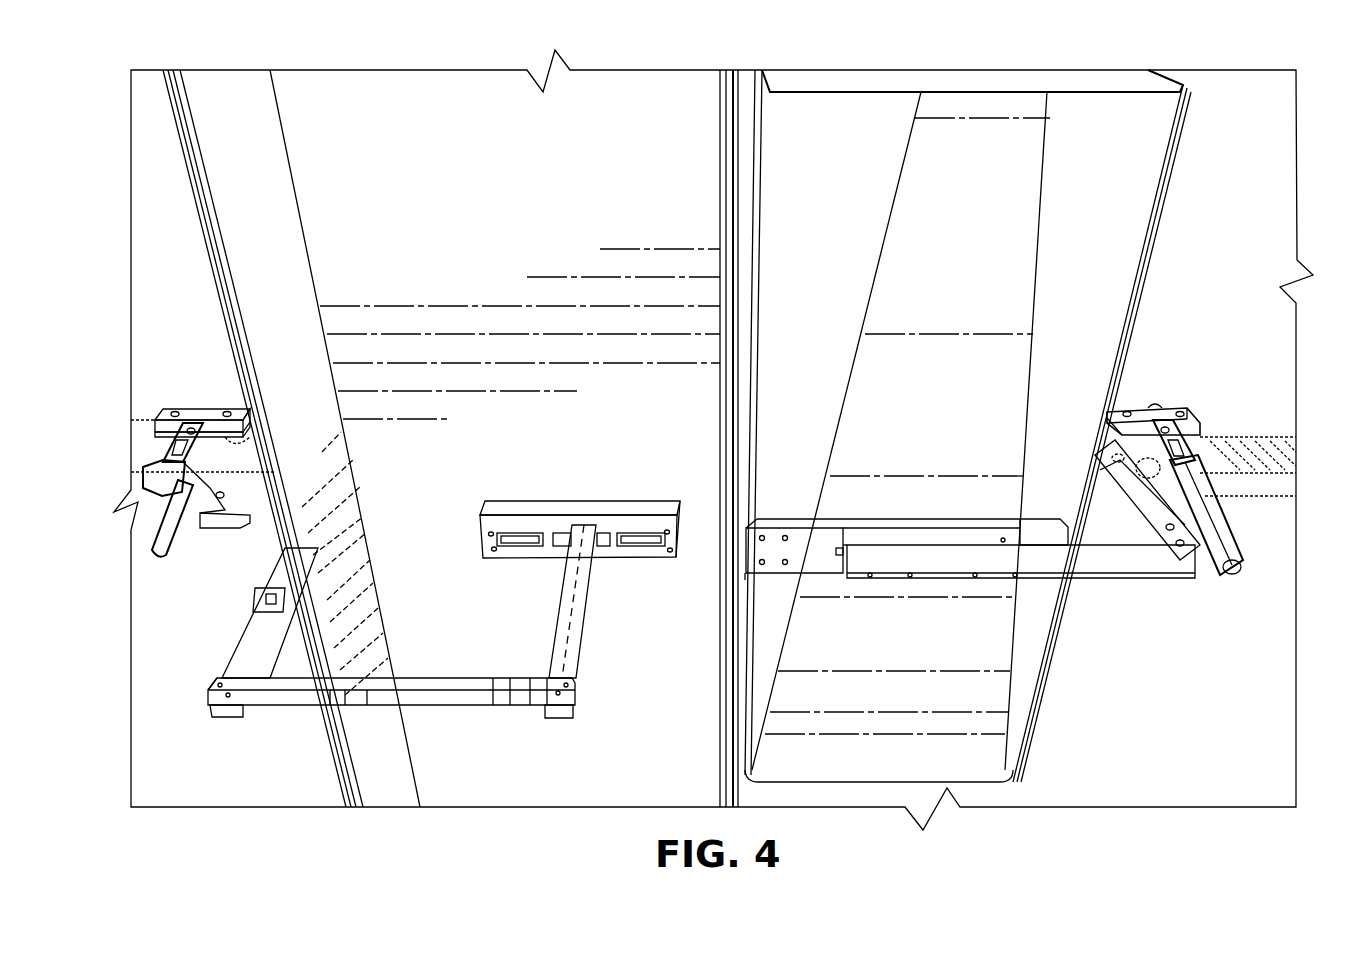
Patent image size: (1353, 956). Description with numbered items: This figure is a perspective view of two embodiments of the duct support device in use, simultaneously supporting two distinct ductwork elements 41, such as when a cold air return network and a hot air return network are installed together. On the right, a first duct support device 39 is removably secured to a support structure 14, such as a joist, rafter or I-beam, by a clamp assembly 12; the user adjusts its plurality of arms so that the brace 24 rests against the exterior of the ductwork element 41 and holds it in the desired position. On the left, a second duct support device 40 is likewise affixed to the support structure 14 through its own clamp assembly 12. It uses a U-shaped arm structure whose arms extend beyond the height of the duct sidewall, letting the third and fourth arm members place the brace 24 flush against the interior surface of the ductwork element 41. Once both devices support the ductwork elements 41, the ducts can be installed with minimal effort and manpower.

The clamp assembly 12 is at (158, 500).
The support structure 14 is at (142, 426).
The brace 24 is at (578, 520).
The first duct support device 39 is at (1124, 572).
The second duct support device 40 is at (210, 717).
The ductwork element 41 is at (400, 172).